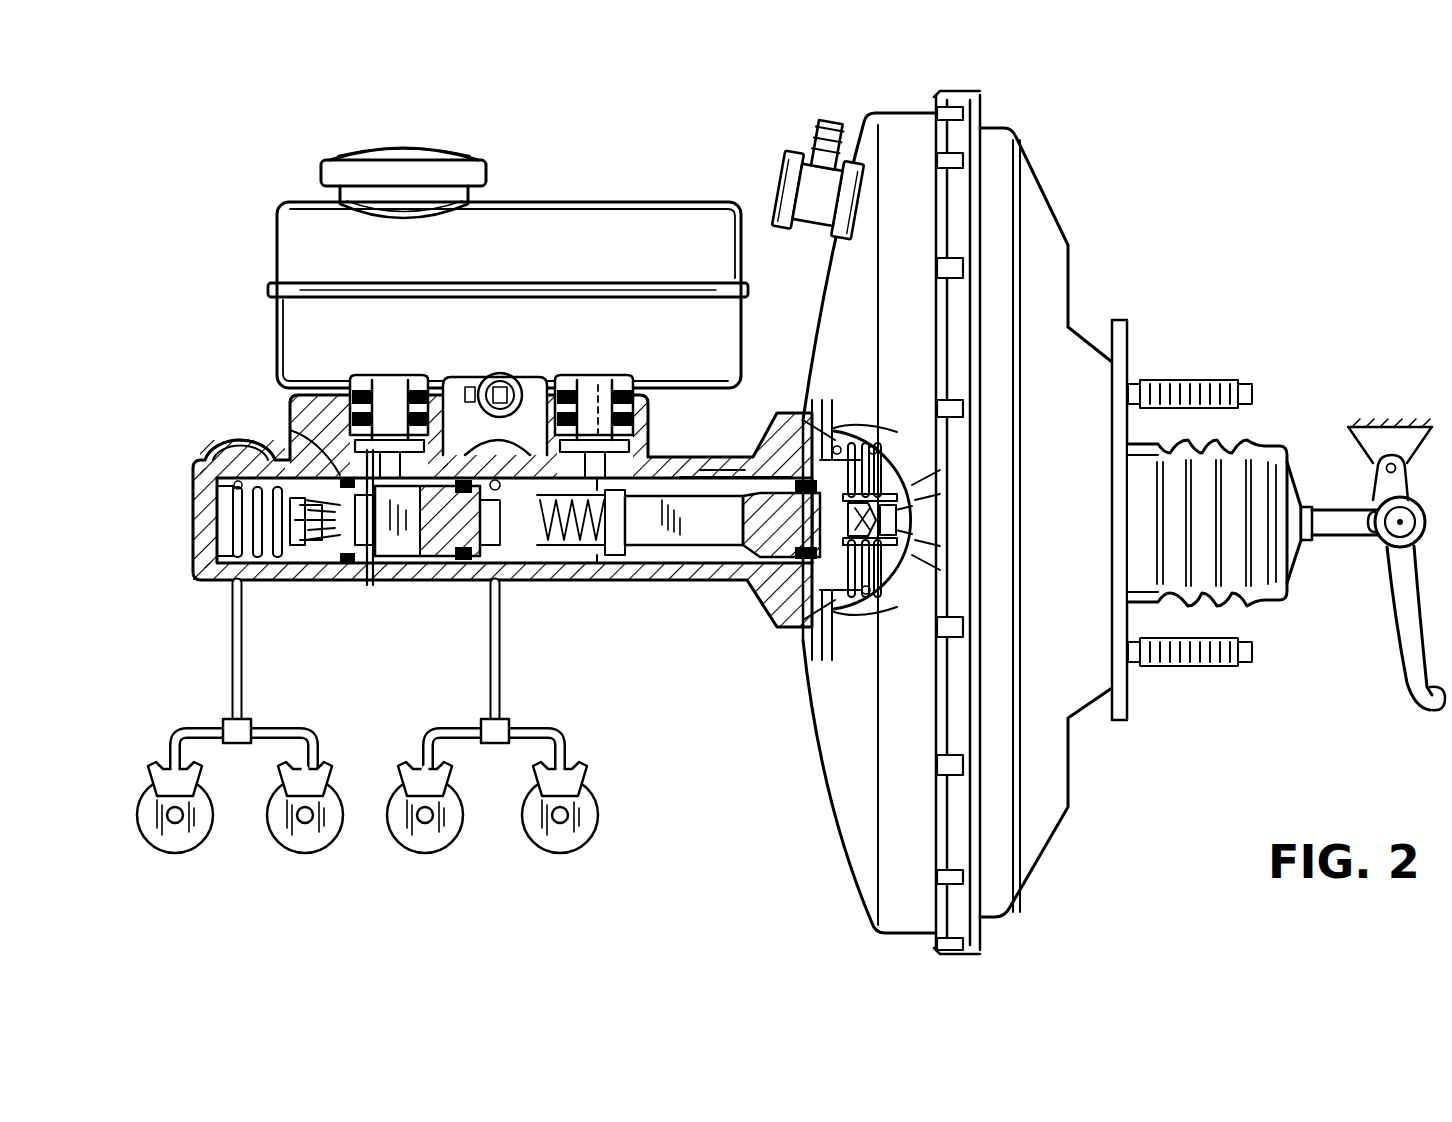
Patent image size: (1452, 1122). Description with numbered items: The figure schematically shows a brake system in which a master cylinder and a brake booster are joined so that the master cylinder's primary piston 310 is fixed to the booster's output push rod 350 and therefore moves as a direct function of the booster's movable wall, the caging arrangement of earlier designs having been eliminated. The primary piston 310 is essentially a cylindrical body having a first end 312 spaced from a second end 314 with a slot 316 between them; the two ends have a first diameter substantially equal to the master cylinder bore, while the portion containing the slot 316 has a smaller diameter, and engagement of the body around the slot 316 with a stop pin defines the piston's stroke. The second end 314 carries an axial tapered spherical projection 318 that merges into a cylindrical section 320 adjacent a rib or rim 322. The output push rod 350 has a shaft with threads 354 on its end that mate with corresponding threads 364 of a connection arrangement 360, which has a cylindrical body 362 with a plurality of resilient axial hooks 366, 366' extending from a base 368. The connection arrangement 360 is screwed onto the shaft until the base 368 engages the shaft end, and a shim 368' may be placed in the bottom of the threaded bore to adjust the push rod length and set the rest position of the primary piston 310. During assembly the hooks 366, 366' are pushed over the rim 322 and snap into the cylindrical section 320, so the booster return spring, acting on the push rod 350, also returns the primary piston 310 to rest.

The primary piston 310 is at (740, 612).
The first end 312 is at (590, 590).
The second end 314 is at (738, 555).
The slot 316 is at (800, 440).
The axial tapered spherical projection 318 is at (830, 580).
The cylindrical section 320 is at (795, 445).
The rib or rim 322 is at (872, 445).
The output push rod 350 is at (918, 548).
The threads 354 is at (907, 510).
The connection arrangement 360 is at (895, 480).
The cylindrical body 362 is at (862, 600).
The threads 364 is at (903, 600).
The resilient axial hook 366 is at (879, 407).
The resilient axial hook 366' is at (798, 628).
The base 368 is at (887, 468).
The shim 368' is at (981, 510).